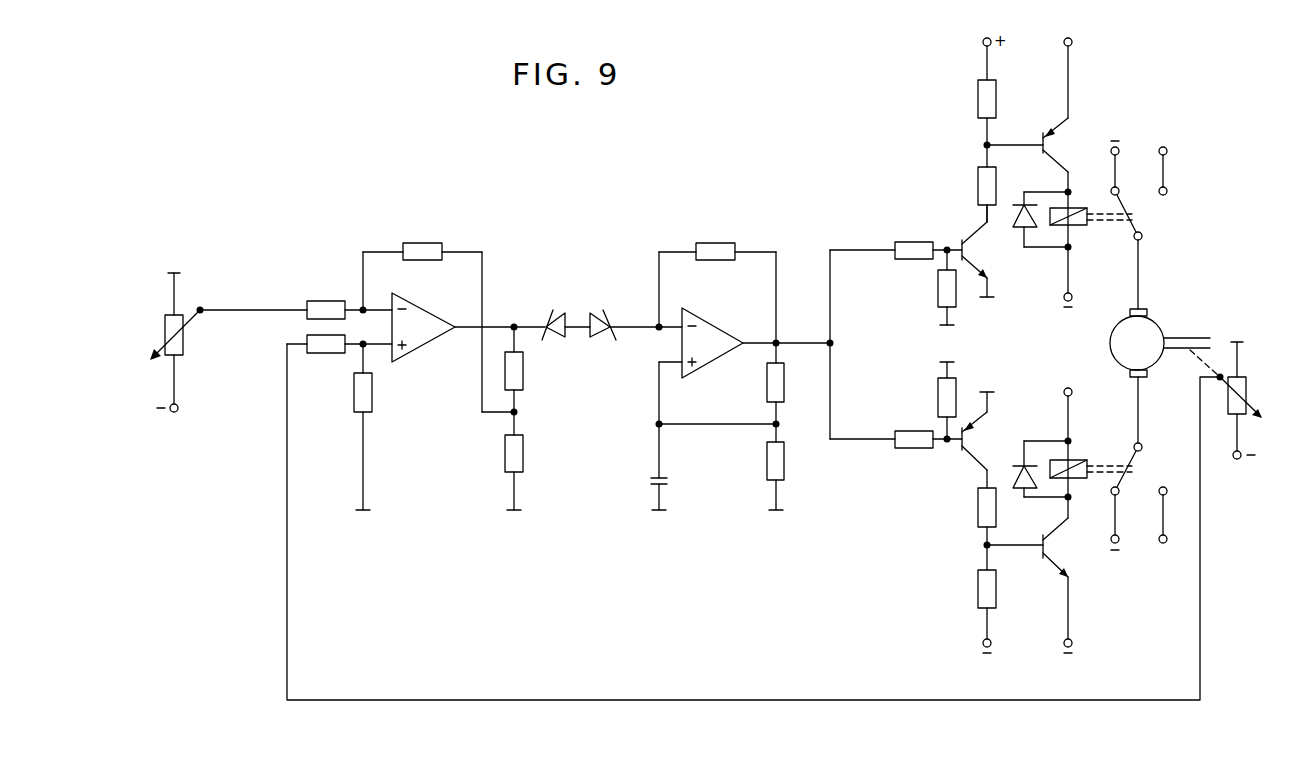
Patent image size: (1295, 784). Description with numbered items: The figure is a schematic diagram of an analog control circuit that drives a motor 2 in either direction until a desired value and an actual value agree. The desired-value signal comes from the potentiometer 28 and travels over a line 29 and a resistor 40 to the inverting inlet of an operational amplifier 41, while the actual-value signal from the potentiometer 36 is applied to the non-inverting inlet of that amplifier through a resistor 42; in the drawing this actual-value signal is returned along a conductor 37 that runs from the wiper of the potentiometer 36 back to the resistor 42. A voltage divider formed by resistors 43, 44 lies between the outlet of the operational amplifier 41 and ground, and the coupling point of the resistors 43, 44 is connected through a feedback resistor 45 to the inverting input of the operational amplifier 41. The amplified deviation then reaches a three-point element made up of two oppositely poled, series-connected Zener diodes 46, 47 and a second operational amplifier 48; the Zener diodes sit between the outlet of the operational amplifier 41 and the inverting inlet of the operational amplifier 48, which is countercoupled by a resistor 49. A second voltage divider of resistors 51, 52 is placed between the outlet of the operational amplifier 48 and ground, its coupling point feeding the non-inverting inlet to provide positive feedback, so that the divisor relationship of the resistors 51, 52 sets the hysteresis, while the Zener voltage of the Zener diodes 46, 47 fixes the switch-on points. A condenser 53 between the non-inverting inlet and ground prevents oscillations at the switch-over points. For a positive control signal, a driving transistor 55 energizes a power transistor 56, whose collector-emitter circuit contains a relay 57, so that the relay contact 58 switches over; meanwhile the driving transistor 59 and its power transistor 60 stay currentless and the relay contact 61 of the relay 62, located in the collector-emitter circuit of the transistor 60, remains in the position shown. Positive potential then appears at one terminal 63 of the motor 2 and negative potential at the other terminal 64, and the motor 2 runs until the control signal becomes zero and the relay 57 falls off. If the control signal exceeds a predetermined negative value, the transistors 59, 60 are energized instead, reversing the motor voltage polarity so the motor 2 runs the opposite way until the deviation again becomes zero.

The motor 2 is at (1150, 333).
The potentiometer 28 is at (165, 325).
The line 29 is at (243, 310).
The potentiometer 36 is at (1246, 385).
The feedback line 37 is at (1200, 527).
The resistor 40 is at (320, 308).
The operational amplifier 41 is at (418, 345).
The resistor 42 is at (325, 348).
The resistor 43 is at (516, 368).
The resistor 44 is at (516, 450).
The feedback resistor 45 is at (425, 250).
The Zener diode 46 is at (556, 316).
The Zener diode 47 is at (603, 316).
The operational amplifier 48 is at (712, 333).
The resistor 49 is at (712, 250).
The resistor 51 is at (778, 380).
The resistor 52 is at (778, 458).
The condenser 53 is at (650, 480).
The driving transistor 55 is at (988, 260).
The power transistor 56 is at (1080, 129).
The relay 57 is at (1080, 218).
The relay contact 58 is at (1142, 219).
The driving transistor 59 is at (962, 462).
The power transistor 60 is at (1073, 555).
The relay contact 61 is at (1132, 470).
The relay 62 is at (1080, 462).
The terminal 63 is at (1147, 312).
The terminal 64 is at (1147, 375).